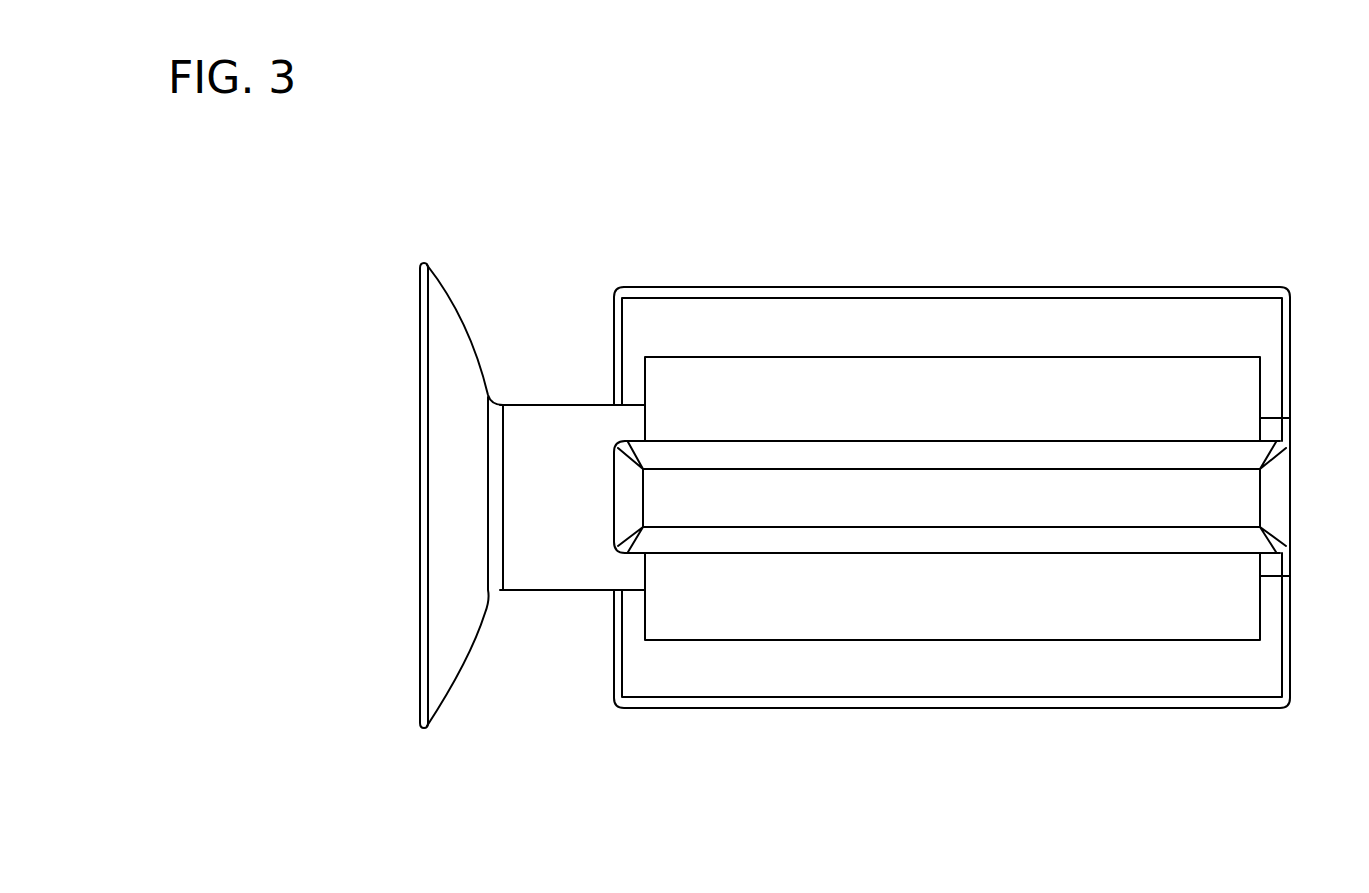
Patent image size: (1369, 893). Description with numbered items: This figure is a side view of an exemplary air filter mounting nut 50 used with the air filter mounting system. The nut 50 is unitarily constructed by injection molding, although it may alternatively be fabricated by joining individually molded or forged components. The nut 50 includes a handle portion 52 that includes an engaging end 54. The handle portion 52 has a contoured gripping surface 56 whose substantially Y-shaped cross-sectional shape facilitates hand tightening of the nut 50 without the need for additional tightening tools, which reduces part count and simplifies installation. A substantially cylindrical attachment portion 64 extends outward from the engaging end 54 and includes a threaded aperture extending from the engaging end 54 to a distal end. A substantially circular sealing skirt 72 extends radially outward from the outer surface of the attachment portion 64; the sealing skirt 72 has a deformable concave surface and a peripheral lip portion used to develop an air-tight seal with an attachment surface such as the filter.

The air filter mounting nut 50 is at (730, 710).
The handle portion 52 is at (1290, 245).
The engaging end 54 is at (612, 397).
The contoured gripping surface 56 is at (1222, 387).
The attachment portion 64 is at (545, 580).
The sealing skirt 72 is at (450, 363).